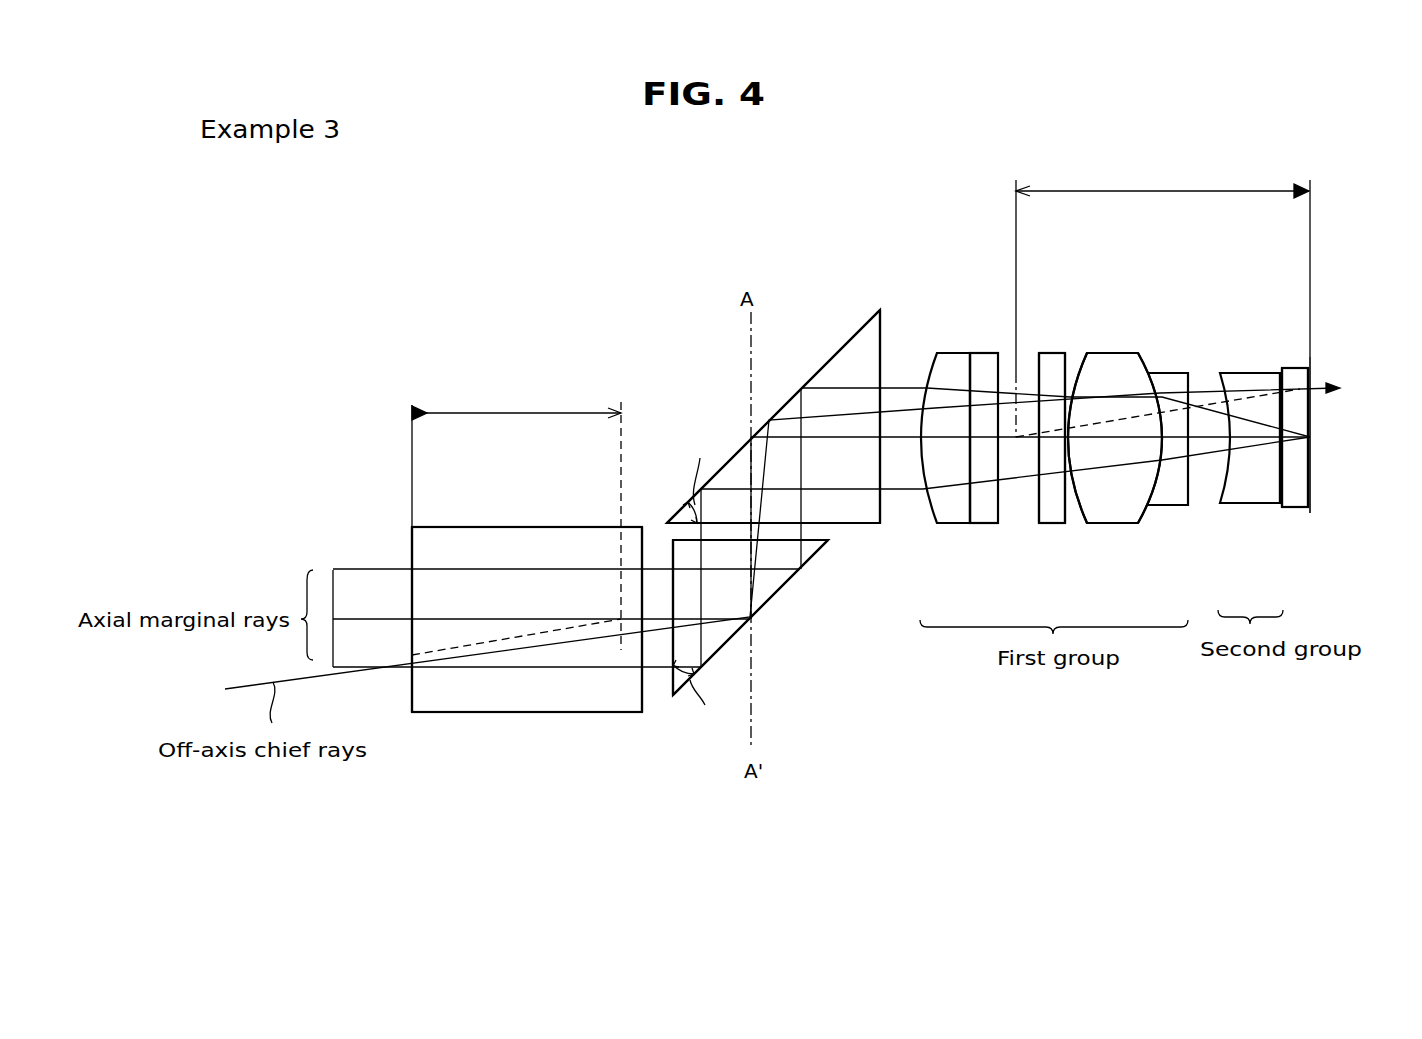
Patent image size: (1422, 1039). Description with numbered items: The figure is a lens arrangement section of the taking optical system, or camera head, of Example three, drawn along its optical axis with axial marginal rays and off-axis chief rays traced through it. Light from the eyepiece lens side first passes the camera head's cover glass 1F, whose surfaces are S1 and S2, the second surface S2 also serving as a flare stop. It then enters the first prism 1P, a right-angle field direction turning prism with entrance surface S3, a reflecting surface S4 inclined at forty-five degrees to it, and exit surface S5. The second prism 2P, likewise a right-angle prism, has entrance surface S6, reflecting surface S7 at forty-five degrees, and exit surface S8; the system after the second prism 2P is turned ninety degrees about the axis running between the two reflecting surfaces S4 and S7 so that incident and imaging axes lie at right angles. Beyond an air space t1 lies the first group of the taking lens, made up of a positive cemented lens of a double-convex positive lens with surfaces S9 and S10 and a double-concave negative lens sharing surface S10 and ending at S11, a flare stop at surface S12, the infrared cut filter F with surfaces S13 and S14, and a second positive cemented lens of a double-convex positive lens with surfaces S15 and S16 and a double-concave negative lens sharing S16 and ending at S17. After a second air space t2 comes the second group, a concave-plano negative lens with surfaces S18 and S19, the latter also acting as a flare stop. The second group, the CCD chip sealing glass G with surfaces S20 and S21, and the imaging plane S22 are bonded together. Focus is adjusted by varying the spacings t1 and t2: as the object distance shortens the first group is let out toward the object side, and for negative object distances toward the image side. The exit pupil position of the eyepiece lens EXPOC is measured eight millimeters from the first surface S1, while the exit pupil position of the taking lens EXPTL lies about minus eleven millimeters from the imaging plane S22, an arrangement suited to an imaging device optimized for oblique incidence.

The cover glass 1F is at (530, 695).
The first prism 1P is at (766, 600).
The second prism 2P is at (847, 345).
The infrared cut filter F is at (1055, 525).
The CCD chip sealing glass G is at (1293, 508).
The focus adjustment spacing t1 is at (903, 437).
The focus adjustment spacing t2 is at (1207, 440).
The first surface S1 is at (410, 690).
The second surface S2 is at (647, 695).
The entrance surface S3 is at (675, 682).
The reflecting surface S4 is at (793, 577).
The exit surface of first prism S5 is at (828, 540).
The entrance surface S6 is at (667, 523).
The reflecting surface S7 is at (793, 397).
The exit surface of second prism S8 is at (880, 370).
The surface of double-convex positive lens S9 is at (928, 385).
The cemented surface S10 is at (970, 360).
The surface of double-concave negative lens S11 is at (998, 360).
The flare stop surface S12 is at (1039, 360).
The surface of infrared cut filter S13 is at (1065, 365).
The surface of infrared cut filter S14 is at (1067, 372).
The surface of double-convex positive lens S15 is at (1080, 372).
The cemented surface S16 is at (1140, 360).
The surface of double-concave negative lens S17 is at (1190, 373).
The surface of concave-plano negative lens S18 is at (1219, 385).
The second surface of concave-plano negative lens S19 is at (1280, 372).
The surface of CCD chip sealing glass S20 is at (1298, 368).
The surface of CCD chip sealing glass S21 is at (1309, 510).
The imaging plane S22 is at (1311, 490).
The exit pupil position of the eyepiece lens EXPOC is at (516, 518).
The exit pupil position of the taking lens EXPTL is at (1163, 301).